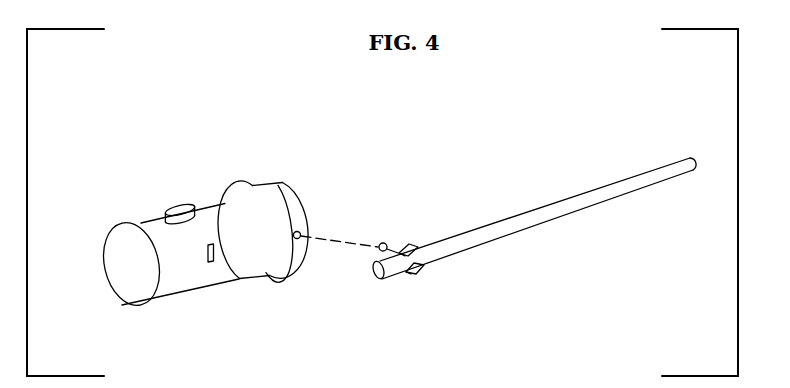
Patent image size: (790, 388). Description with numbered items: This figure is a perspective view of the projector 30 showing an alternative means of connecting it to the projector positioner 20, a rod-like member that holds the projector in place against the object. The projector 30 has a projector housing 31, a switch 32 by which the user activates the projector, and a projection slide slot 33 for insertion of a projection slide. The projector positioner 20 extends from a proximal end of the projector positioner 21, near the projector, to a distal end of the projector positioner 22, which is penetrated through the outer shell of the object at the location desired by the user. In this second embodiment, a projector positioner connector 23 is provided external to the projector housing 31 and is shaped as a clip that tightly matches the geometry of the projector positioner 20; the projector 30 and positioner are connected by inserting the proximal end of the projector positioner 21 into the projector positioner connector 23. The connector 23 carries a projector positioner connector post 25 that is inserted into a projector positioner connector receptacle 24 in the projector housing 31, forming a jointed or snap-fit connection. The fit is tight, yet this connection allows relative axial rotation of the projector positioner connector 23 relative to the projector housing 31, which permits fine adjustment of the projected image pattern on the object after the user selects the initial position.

The projector positioner 20 is at (533, 214).
The proximal end of the projector positioner 21 is at (377, 281).
The distal end of the projector positioner 22 is at (692, 155).
The projector positioner connector 23 is at (424, 272).
The projector positioner connector receptacle 24 is at (301, 233).
The projector positioner connector post 25 is at (383, 243).
The projector 30 is at (202, 288).
The projector housing 31 is at (267, 214).
The switch 32 is at (180, 206).
The projection slide slot 33 is at (212, 244).